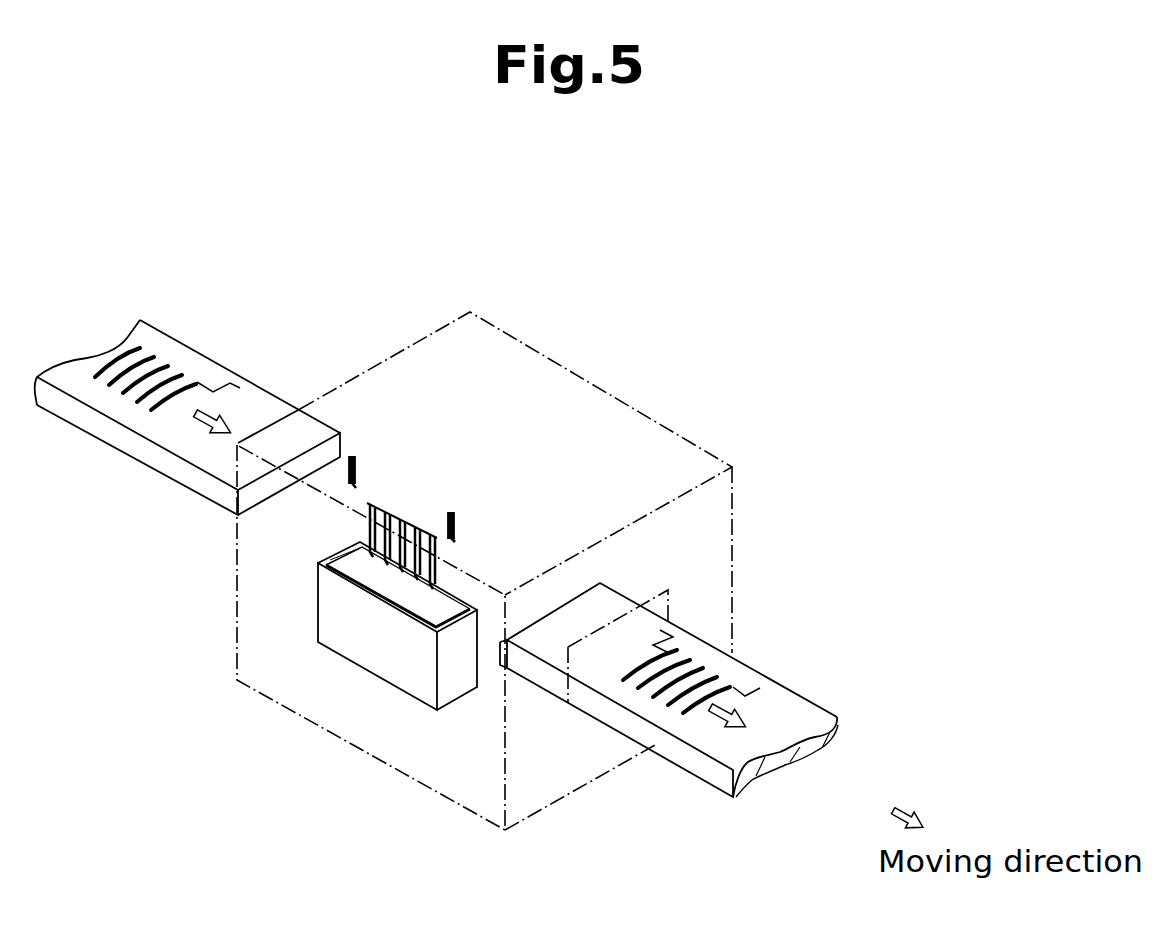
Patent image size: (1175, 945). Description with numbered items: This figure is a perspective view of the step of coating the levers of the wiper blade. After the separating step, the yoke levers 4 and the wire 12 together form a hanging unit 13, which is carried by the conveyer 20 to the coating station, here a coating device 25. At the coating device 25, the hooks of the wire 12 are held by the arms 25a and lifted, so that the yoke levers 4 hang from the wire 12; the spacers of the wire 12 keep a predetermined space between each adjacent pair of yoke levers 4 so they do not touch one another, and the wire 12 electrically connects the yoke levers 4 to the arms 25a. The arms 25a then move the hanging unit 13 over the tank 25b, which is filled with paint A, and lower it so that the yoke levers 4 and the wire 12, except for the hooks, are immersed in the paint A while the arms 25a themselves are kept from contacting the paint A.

The hanging unit 13 is at (460, 466).
The yoke levers 4 is at (115, 360).
The wire 12 is at (90, 268).
The conveyer 20 is at (163, 467).
The coating device 25 is at (432, 790).
The arms 25a is at (353, 463).
The tank 25b is at (387, 670).
The paint A is at (352, 573).